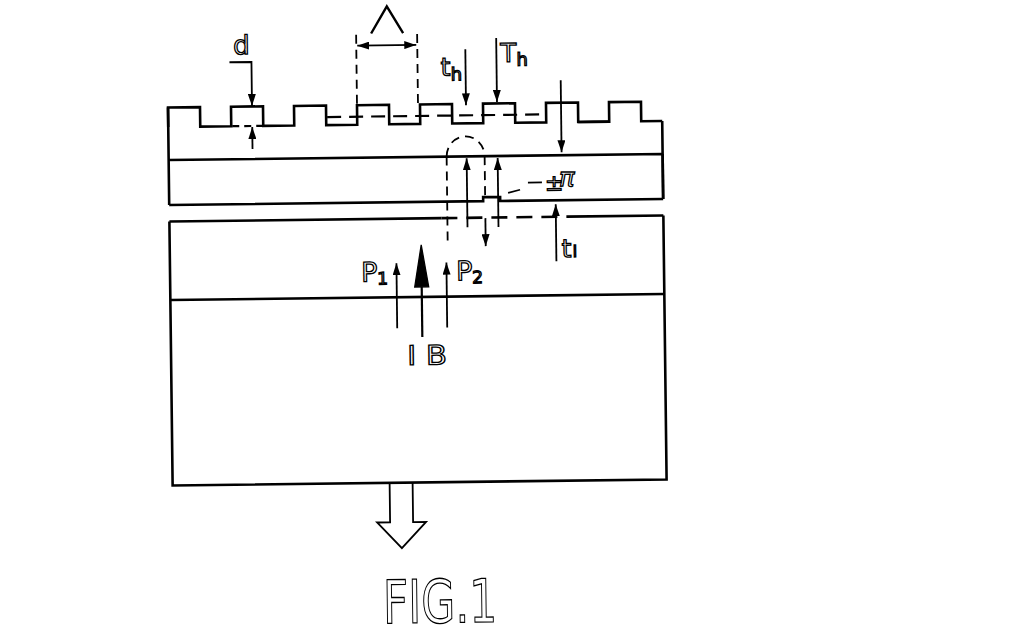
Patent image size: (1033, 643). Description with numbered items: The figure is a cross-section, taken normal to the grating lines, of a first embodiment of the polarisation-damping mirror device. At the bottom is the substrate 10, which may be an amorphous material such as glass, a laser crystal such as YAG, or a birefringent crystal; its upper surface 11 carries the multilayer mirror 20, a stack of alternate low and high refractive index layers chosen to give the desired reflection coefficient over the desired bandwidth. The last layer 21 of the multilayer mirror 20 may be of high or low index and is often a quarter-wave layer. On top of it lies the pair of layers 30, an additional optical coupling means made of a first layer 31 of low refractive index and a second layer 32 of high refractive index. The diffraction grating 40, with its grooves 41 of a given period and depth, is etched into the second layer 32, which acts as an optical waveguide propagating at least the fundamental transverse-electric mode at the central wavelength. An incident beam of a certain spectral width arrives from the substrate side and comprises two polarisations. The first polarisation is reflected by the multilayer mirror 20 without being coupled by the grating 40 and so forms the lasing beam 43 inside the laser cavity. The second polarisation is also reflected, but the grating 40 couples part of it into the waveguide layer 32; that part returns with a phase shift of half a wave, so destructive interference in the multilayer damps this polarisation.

The substrate 10 is at (627, 397).
The upper surface 11 is at (673, 300).
The multilayer mirror 20 is at (625, 254).
The last layer 21 is at (651, 214).
The pair of layers 30 is at (664, 168).
The first layer 31 is at (202, 188).
The second layer 32 is at (202, 140).
The diffraction grating 40 is at (651, 117).
The grooves 41 is at (590, 112).
The lasing beam 43 is at (399, 507).